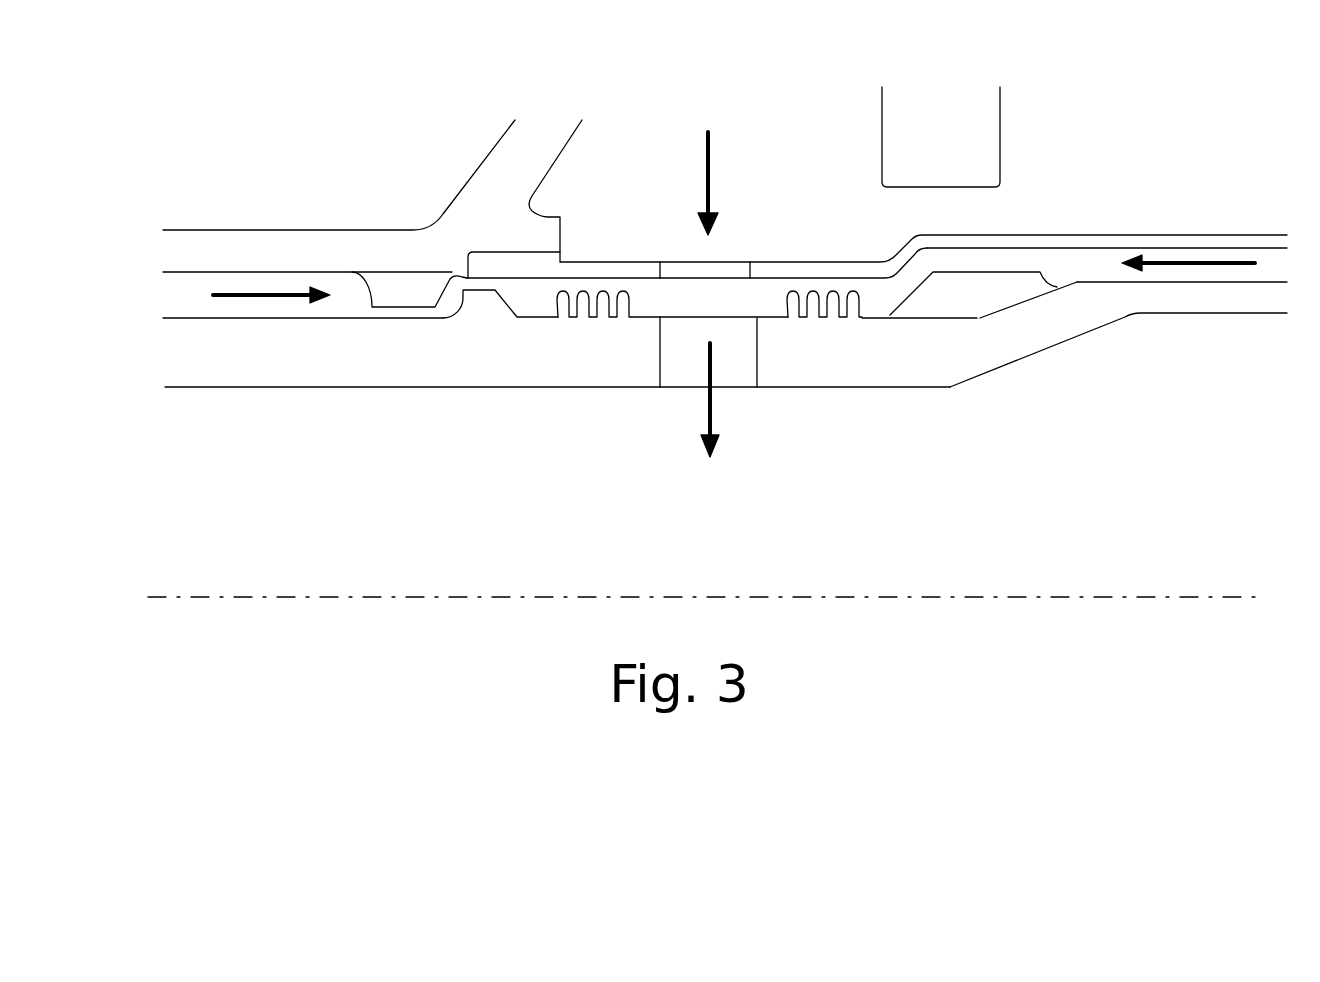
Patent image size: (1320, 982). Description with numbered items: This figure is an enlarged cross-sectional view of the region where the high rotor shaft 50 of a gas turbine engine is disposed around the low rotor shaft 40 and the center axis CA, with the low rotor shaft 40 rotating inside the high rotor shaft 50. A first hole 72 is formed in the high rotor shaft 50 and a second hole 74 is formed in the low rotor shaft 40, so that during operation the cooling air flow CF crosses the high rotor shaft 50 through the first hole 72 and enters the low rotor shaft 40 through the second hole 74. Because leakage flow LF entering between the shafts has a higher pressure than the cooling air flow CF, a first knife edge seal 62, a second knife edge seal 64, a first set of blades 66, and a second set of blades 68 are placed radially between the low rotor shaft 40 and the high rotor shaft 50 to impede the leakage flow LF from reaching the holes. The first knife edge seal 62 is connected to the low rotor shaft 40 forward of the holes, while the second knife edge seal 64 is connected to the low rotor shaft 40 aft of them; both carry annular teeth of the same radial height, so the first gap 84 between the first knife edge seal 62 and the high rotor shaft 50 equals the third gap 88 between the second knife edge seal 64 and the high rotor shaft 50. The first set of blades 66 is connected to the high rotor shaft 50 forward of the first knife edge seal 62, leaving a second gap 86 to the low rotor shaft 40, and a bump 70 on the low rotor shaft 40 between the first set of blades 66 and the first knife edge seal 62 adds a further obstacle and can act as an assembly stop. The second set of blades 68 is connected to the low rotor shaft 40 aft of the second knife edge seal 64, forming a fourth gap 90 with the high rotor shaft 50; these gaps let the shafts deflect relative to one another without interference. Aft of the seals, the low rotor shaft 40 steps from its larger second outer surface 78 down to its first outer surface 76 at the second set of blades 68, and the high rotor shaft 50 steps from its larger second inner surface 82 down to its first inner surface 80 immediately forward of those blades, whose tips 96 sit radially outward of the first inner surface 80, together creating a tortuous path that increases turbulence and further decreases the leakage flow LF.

The low rotor shaft 40 is at (205, 372).
The high rotor shaft 50 is at (222, 255).
The first knife edge seal 62 is at (593, 322).
The second knife edge seal 64 is at (835, 297).
The first set of blades 66 is at (402, 288).
The second set of blades 68 is at (978, 287).
The bump 70 is at (481, 302).
The first hole 72 is at (682, 262).
The second hole 74 is at (687, 357).
The first outer surface 76 is at (920, 317).
The second outer surface 78 is at (1100, 282).
The first inner surface 80 is at (872, 277).
The second inner surface 82 is at (1100, 243).
The first gap 84 is at (572, 288).
The second gap 86 is at (402, 312).
The third gap 88 is at (802, 288).
The fourth gap 90 is at (972, 265).
The tip 96 is at (1003, 268).
The leakage flow LF is at (260, 292).
The cooling air flow CF is at (715, 407).
The center axis CA is at (245, 597).